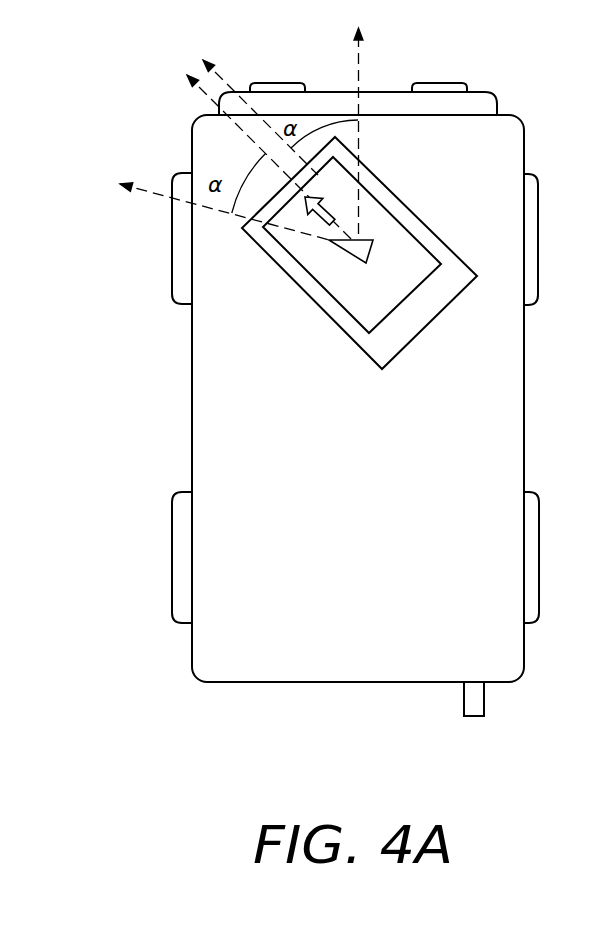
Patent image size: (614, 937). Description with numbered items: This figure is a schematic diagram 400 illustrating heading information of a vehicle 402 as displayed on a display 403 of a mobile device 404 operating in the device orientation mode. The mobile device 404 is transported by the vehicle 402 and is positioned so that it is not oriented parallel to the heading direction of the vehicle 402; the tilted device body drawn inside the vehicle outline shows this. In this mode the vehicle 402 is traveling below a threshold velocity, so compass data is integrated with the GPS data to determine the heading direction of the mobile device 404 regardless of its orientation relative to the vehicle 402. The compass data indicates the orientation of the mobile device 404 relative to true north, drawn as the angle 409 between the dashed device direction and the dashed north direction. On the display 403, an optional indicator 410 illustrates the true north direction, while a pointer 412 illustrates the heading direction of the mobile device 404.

The schematic diagram 400 is at (566, 128).
The vehicle 402 is at (525, 362).
The display 403 is at (418, 240).
The mobile device 404 is at (388, 192).
The angle 409 is at (266, 162).
The indicator 410 is at (323, 207).
The pointer 412 is at (372, 248).